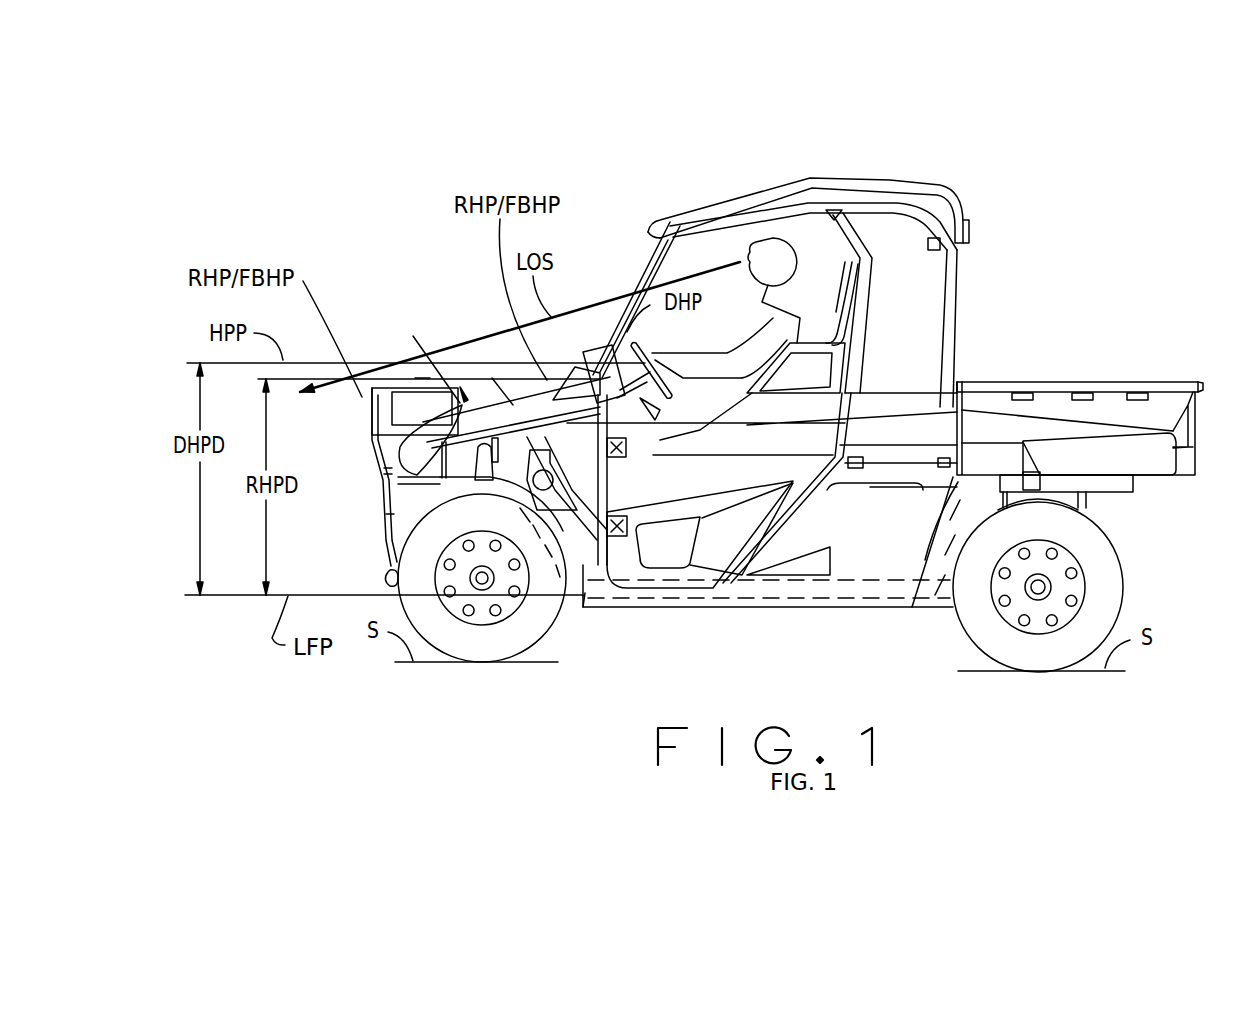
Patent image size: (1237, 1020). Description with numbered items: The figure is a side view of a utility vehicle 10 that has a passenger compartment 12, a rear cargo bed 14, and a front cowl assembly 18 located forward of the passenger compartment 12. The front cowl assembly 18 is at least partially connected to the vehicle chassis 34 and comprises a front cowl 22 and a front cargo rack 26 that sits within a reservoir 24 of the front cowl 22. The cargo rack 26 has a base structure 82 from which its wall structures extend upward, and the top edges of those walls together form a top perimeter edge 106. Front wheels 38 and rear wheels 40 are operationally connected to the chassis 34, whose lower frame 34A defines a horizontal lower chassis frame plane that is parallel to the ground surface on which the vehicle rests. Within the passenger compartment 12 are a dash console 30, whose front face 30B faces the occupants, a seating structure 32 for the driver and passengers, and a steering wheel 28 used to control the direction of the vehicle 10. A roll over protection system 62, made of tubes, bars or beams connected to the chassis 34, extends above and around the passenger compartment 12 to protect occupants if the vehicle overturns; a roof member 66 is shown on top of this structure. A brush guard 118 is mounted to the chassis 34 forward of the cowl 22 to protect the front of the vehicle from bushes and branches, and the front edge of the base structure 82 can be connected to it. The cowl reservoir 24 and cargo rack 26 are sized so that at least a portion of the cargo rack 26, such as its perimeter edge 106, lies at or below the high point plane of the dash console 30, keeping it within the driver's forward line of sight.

The utility vehicle 10 is at (1083, 180).
The passenger compartment 12 is at (685, 250).
The rear cargo bed 14 is at (1103, 418).
The front cowl assembly 18 is at (413, 336).
The front cowl 22 is at (522, 400).
The reservoir 24 is at (500, 405).
The front cargo rack 26 is at (357, 411).
The steering wheel 28 is at (645, 347).
The dash console 30 is at (595, 358).
The front face 30B is at (648, 398).
The seating structure 32 is at (836, 332).
The chassis 34 is at (388, 582).
The lower frame 34A is at (586, 596).
The front wheels 38 is at (545, 632).
The rear wheels 40 is at (1100, 596).
The roll over protection system 62 is at (647, 263).
The roof 66 is at (700, 195).
The base structure 82 is at (383, 473).
The top perimeter edge 106 is at (420, 378).
The brush guard 118 is at (386, 518).